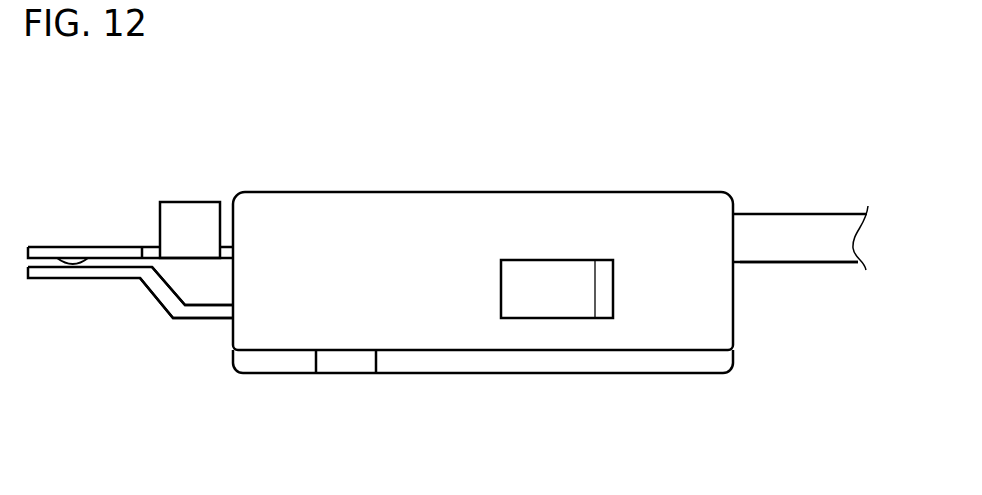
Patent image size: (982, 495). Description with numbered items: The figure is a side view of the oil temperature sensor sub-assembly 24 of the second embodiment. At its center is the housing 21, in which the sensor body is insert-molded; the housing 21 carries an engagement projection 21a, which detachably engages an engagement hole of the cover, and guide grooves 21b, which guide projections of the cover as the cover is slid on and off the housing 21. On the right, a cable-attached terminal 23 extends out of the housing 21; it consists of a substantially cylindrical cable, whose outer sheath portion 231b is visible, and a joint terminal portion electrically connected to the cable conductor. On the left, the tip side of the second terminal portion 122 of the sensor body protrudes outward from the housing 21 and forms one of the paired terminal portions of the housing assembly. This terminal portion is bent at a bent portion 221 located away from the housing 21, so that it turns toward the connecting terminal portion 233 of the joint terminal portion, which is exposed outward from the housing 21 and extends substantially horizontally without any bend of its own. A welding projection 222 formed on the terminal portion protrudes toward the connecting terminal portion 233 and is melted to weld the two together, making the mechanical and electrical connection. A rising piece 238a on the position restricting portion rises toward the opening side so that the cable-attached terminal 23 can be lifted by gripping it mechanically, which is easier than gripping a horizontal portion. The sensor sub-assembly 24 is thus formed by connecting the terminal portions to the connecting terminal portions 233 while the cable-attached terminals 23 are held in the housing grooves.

The housing 21 is at (495, 192).
The engagement projection 21a is at (553, 287).
The guide groove 21b is at (421, 352).
The cable-attached terminal 23 is at (780, 262).
The sensor sub-assembly 24 is at (663, 160).
The cable sheath portion 231b is at (808, 225).
The connecting terminal portion 233 is at (72, 247).
The rising piece 238a is at (192, 220).
The bent portion 221 is at (160, 302).
The welding projection 222 is at (80, 266).
The second terminal portion 122 is at (205, 320).